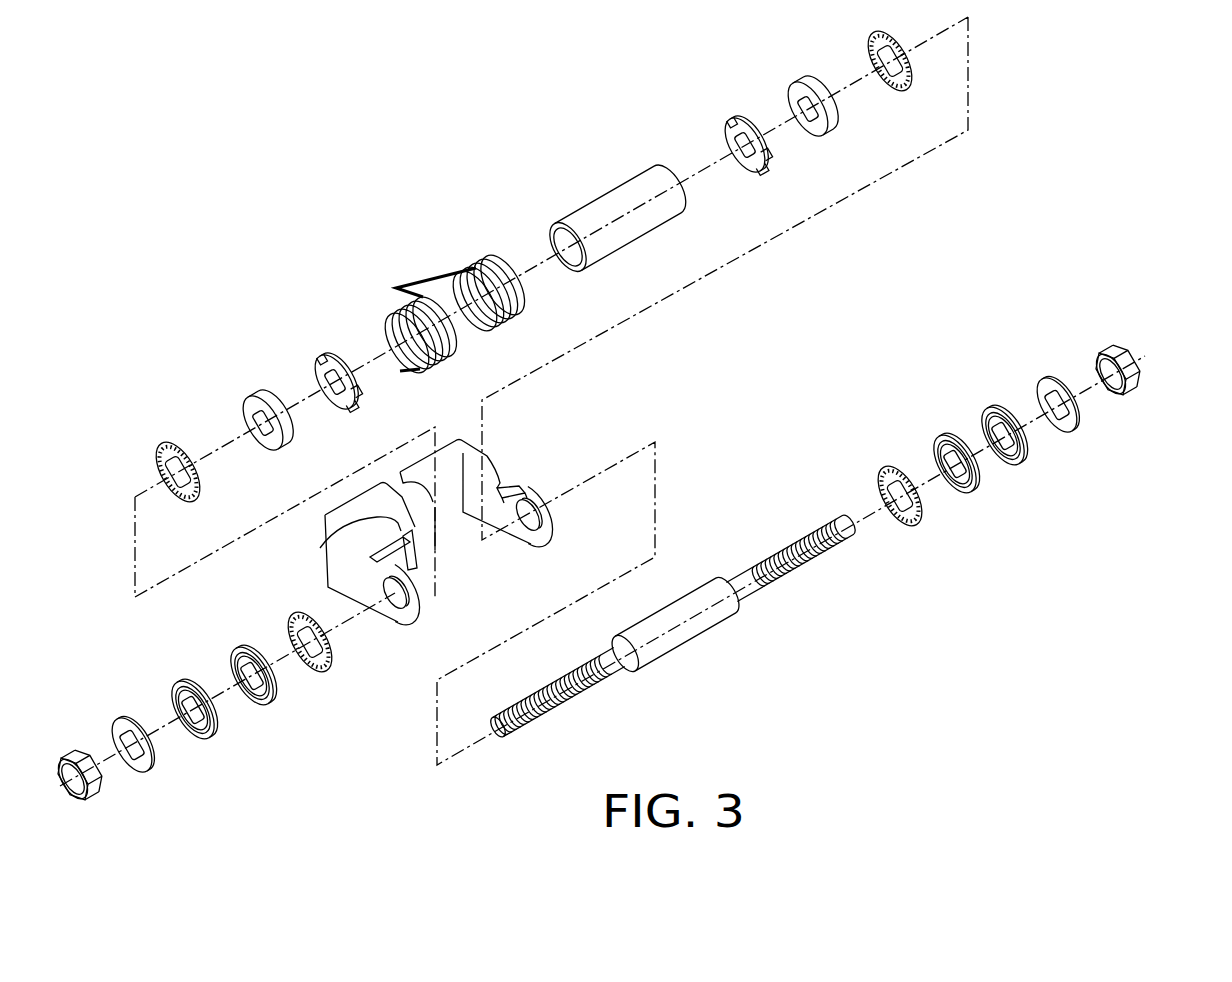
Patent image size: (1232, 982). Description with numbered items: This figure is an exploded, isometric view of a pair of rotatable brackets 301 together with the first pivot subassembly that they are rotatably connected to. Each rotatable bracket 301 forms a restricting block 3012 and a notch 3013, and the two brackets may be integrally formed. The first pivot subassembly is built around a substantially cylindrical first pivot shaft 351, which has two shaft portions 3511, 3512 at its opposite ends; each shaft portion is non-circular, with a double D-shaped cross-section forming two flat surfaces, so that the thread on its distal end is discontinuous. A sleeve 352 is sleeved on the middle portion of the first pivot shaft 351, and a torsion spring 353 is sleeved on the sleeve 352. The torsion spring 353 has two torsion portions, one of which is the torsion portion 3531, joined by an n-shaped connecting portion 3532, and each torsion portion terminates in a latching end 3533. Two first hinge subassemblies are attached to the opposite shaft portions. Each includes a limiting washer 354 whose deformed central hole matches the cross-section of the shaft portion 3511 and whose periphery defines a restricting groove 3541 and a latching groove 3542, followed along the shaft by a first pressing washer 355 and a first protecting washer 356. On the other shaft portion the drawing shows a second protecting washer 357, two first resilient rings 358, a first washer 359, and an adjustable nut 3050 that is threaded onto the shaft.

The rotatable bracket 301 is at (431, 525).
The restricting block 3012 is at (512, 487).
The notch 3013 is at (332, 551).
The adjustable nut 3050 is at (1133, 392).
The first pivot shaft 351 is at (697, 668).
The shaft portion 3511 is at (747, 600).
The threaded end portion of shaft 3512 is at (530, 723).
The sleeve 352 is at (620, 202).
The torsion spring 353 is at (408, 312).
The coil portion of spring 3531 is at (493, 257).
The n-shaped connecting portion 3532 is at (410, 267).
The latching end 3533 is at (422, 377).
The limiting washer 354 is at (720, 156).
The restricting groove 3541 is at (747, 110).
The latching groove 3542 is at (743, 180).
The first pressing washer 355 is at (808, 77).
The first protecting washer 356 is at (868, 39).
The second protecting washer 357 is at (920, 520).
The first resilient rings 358 is at (977, 492).
The first washer 359 is at (1072, 427).